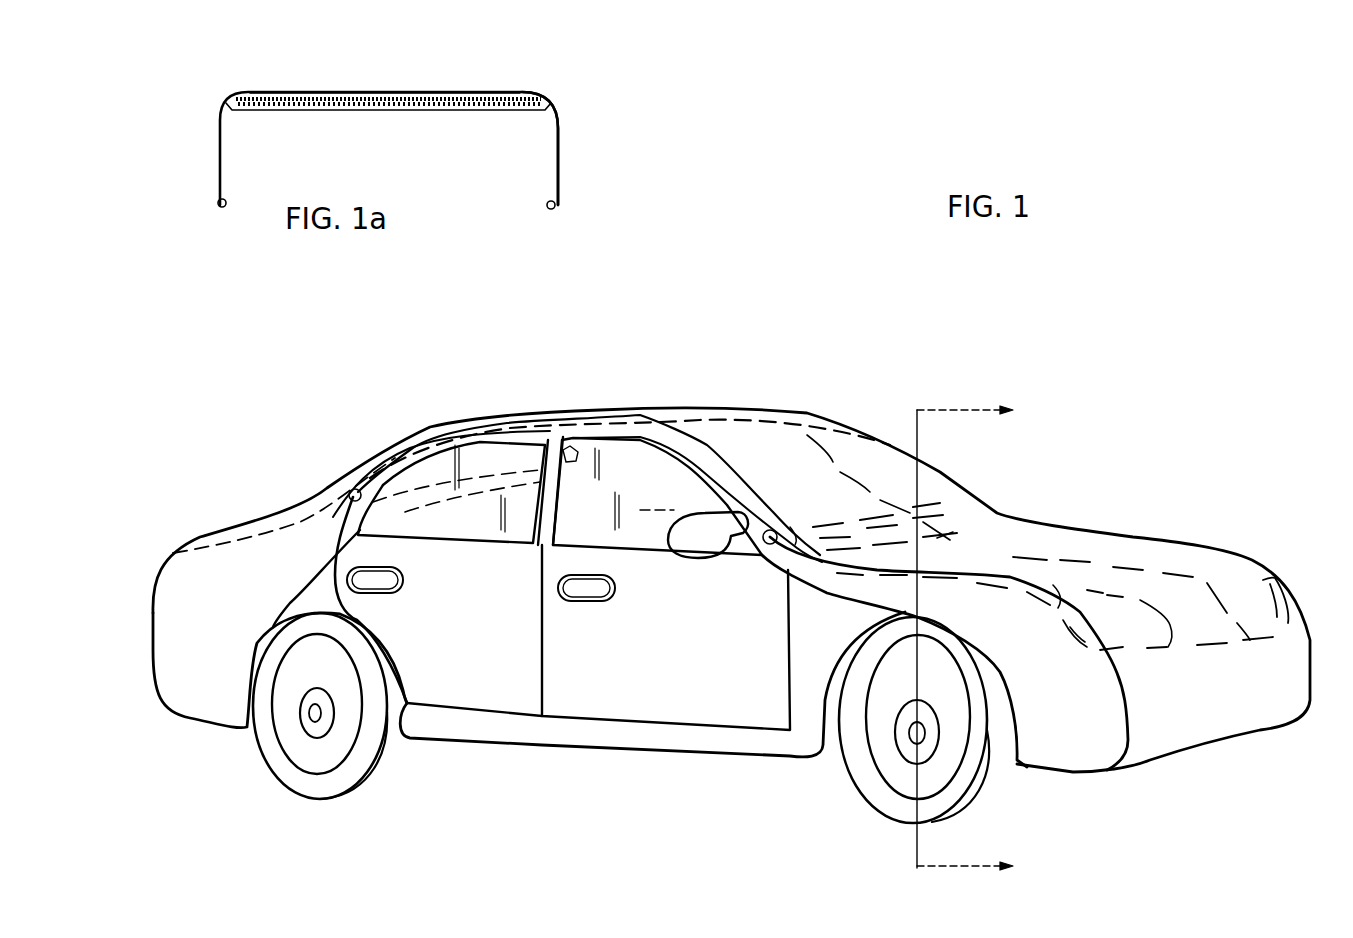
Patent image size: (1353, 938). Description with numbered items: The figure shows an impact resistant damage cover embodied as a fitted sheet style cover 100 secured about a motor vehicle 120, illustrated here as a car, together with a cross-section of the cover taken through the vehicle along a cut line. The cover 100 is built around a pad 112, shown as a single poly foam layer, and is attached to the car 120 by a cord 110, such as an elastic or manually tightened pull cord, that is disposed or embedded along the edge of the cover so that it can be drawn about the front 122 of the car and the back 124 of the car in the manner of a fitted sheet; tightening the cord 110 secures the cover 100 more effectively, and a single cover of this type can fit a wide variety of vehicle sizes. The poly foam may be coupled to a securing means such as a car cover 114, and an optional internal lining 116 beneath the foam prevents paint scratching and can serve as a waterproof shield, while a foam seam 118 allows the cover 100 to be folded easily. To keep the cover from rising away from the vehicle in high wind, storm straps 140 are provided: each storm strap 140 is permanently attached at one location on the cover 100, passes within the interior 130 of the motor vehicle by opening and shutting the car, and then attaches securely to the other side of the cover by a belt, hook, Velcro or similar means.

In FIG. 1A, the fitted sheet style cover 100 is at (350, 78).
In FIG. 1, the fitted sheet style cover 100 is at (935, 365).
In FIG. 1A, the cord 110 is at (560, 207).
In FIG. 1, the cord 110 is at (393, 462).
In FIG. 1A, the pad 112 is at (482, 92).
In FIG. 1A, the car cover 114 is at (560, 125).
In FIG. 1A, the internal lining 116 is at (333, 105).
In FIG. 1, the foam seam 118 is at (1080, 562).
In FIG. 1, the motor vehicle 120 is at (475, 590).
In FIG. 1, the front 122 is at (1195, 513).
In FIG. 1, the back 124 is at (272, 452).
In FIG. 1, the interior 130 is at (694, 522).
In FIG. 1, the storm strap 140 is at (473, 473).